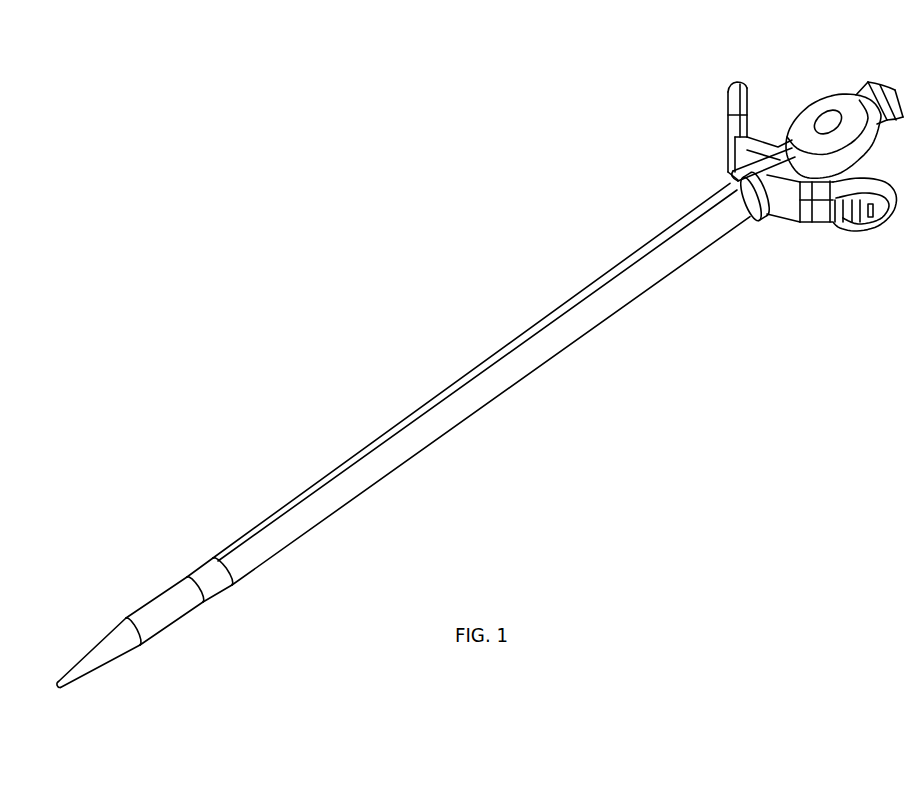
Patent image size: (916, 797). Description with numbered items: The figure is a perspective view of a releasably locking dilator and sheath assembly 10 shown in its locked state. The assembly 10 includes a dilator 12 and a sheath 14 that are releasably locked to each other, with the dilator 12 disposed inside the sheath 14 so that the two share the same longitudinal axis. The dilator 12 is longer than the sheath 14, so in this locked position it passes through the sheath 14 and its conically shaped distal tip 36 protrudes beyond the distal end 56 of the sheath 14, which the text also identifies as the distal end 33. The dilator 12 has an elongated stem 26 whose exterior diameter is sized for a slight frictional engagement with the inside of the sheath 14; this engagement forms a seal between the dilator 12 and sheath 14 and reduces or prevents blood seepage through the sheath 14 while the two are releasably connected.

The releasably locking dilator and sheath assembly 10 is at (315, 325).
The dilator 12 is at (168, 626).
The sheath 14 is at (617, 313).
The stem 26 is at (150, 600).
The distal end of the sheath 33 is at (127, 620).
The distal tip 36 is at (70, 670).
The distal end of the sheath 56 is at (196, 563).